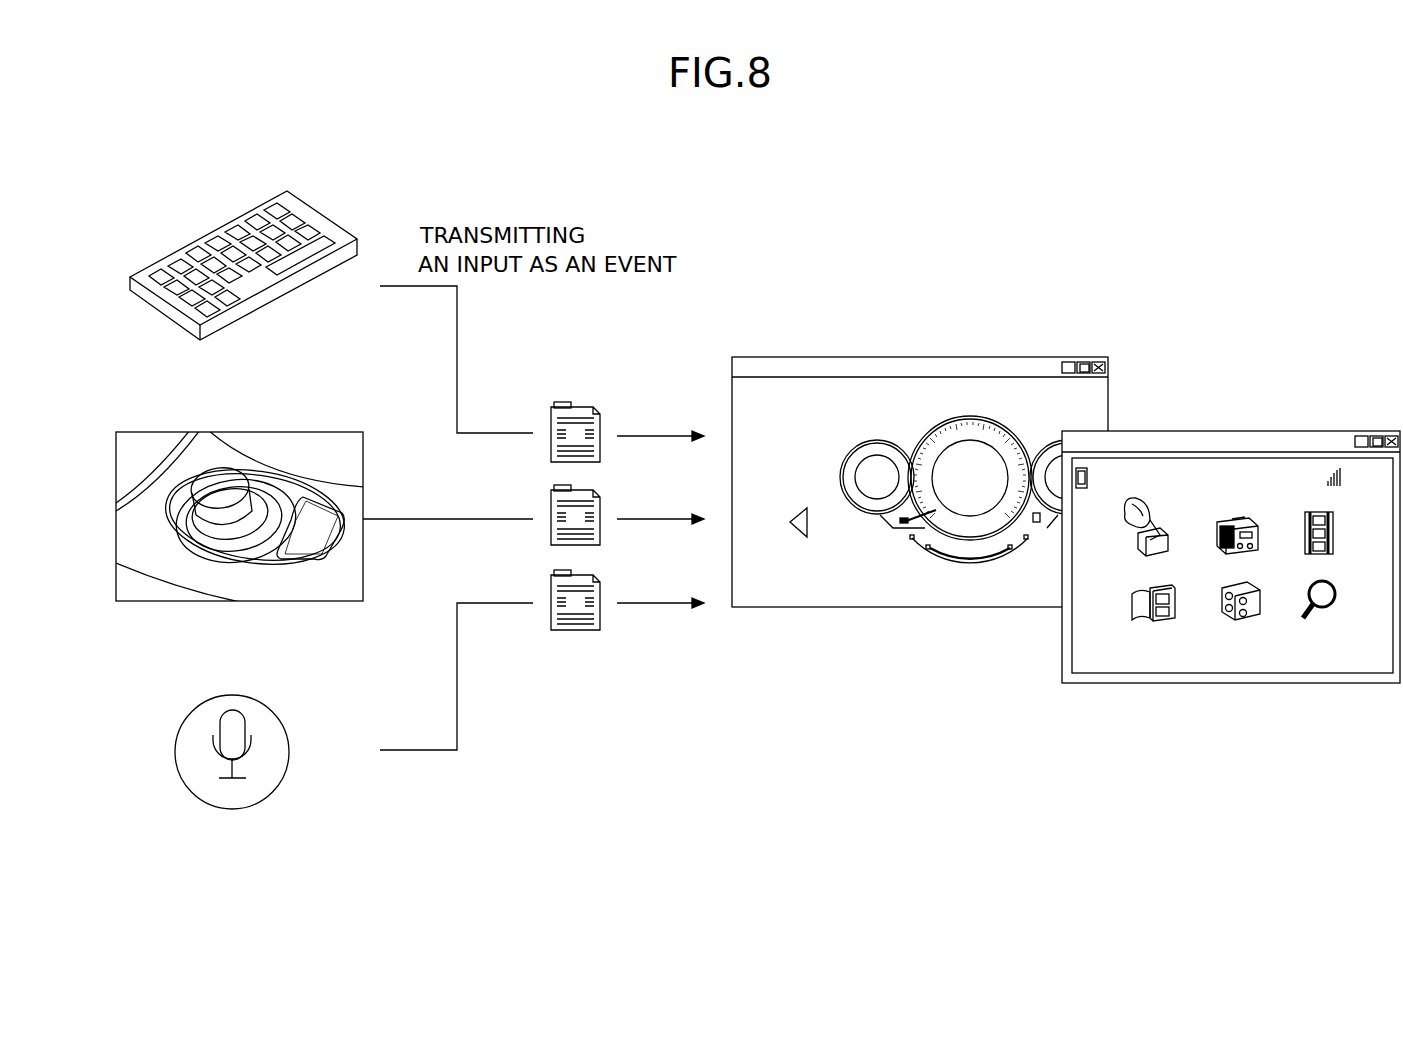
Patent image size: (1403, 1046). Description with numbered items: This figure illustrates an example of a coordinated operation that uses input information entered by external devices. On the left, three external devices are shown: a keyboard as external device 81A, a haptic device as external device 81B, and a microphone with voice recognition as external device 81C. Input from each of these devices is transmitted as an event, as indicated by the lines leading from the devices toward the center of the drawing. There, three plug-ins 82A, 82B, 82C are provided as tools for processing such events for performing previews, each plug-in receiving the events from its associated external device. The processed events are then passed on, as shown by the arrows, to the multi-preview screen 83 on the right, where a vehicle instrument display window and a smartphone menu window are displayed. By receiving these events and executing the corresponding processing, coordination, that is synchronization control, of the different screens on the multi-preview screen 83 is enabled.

The external device 81A is at (130, 278).
The external device 81B is at (117, 515).
The external device 81C is at (175, 748).
The plug-in 82A is at (582, 407).
The plug-in 82B is at (582, 490).
The plug-in 82C is at (582, 575).
The multi-preview screen 83 is at (1201, 332).